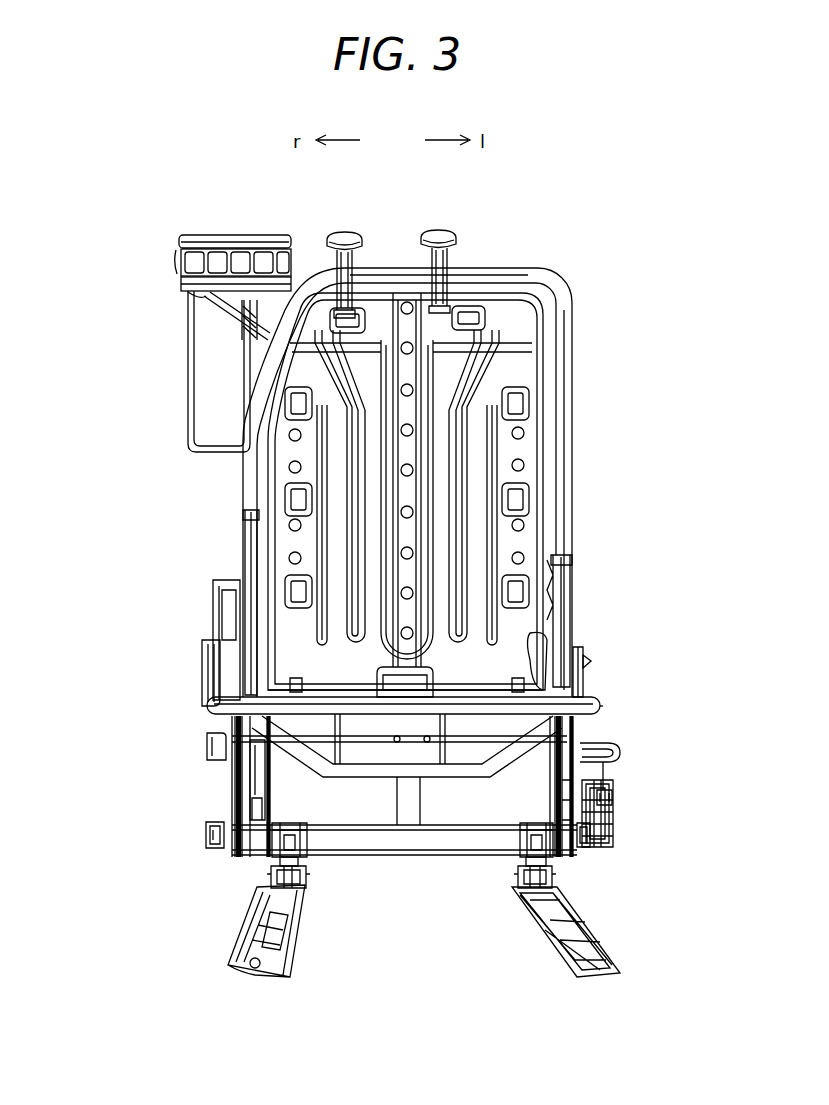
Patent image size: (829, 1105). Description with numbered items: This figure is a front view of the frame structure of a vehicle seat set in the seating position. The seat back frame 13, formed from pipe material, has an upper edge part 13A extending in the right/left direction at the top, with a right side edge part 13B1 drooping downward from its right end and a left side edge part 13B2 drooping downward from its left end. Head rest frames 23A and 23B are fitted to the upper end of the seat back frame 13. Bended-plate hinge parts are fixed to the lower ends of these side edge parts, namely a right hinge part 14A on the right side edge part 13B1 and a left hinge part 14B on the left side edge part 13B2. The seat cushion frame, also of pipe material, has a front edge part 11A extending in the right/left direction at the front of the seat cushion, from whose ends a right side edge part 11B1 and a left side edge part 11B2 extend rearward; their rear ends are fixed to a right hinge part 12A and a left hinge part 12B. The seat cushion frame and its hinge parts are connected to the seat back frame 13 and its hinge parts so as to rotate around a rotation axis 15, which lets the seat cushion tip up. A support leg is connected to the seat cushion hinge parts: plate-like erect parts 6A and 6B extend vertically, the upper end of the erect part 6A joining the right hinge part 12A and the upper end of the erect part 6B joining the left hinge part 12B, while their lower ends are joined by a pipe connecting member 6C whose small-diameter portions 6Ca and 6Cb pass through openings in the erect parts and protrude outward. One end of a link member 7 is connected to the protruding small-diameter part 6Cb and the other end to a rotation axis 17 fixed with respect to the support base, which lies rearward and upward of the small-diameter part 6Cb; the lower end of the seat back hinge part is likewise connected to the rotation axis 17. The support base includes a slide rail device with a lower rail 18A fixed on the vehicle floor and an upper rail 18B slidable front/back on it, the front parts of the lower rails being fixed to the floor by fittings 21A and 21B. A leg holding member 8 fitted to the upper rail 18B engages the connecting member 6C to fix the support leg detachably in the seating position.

The seat back frame 13 is at (581, 265).
The upper edge part 13A is at (506, 268).
The right side edge part 13B1 is at (240, 490).
The left side edge part 13B2 is at (573, 436).
The right hinge part 14A is at (243, 555).
The left hinge part 14B is at (573, 602).
The rotation axis 15 is at (600, 658).
The right hinge part 12A is at (207, 700).
The left hinge part 12B is at (593, 683).
The front edge part 11A is at (460, 716).
The right side edge part 11B1 is at (208, 716).
The left side edge part 11B2 is at (602, 712).
The erect part 6A is at (232, 773).
The erect part 6B is at (605, 780).
The connecting member 6C is at (420, 843).
The small-diameter portion 6Ca is at (222, 850).
The small-diameter portion 6Cb is at (587, 847).
The link member 7 is at (616, 812).
The leg holding member 8 is at (290, 825).
The rotation axis 17 is at (607, 798).
The lower rail 18A is at (262, 880).
The upper rail 18B is at (300, 865).
The fitting 21A is at (244, 944).
The fitting 21B is at (595, 946).
The head rest frame 23A is at (345, 230).
The head rest frame 23B is at (440, 230).